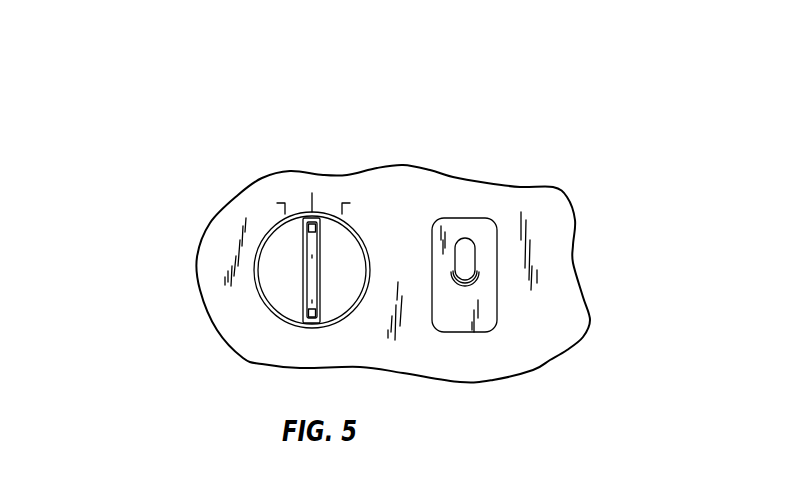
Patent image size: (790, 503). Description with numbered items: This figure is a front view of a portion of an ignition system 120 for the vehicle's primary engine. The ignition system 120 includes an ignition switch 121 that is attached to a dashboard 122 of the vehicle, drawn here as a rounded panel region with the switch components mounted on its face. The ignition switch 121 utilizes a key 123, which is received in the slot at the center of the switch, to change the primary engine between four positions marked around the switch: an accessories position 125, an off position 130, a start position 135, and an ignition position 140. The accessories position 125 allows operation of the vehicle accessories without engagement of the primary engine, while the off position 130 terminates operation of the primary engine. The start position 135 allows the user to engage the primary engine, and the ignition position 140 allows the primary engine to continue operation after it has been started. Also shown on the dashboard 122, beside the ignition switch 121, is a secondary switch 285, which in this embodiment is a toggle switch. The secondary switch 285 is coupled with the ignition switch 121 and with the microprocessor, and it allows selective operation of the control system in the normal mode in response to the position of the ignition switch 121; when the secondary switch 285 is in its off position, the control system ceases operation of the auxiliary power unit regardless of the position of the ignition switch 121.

The ignition system 120 is at (443, 77).
The ignition switch 121 is at (269, 272).
The dashboard 122 is at (493, 192).
The key 123 is at (305, 285).
The accessories position 125 is at (277, 203).
The off position 130 is at (311, 200).
The start position 135 is at (363, 232).
The ignition position 140 is at (342, 203).
The secondary switch 285 is at (480, 276).